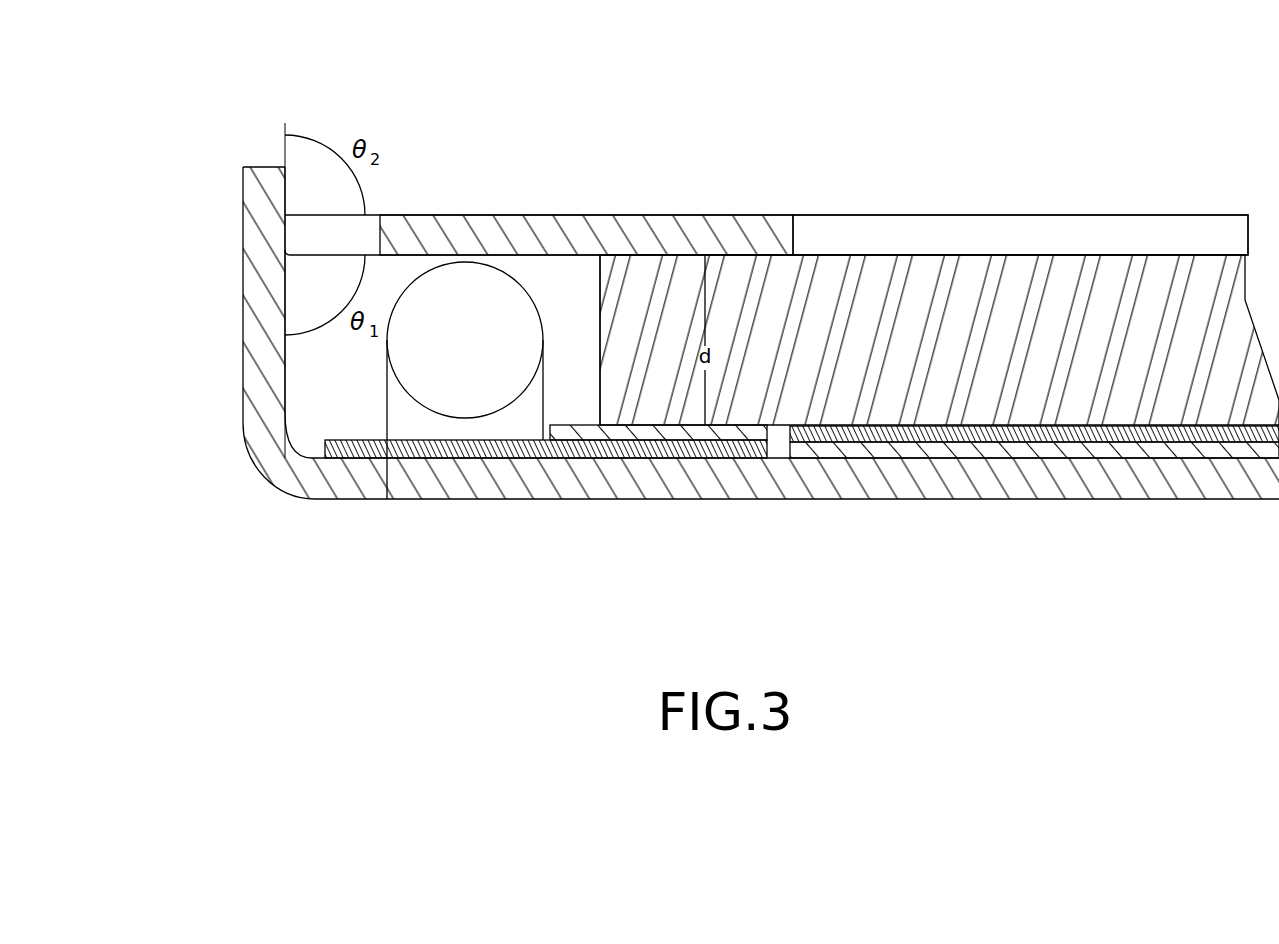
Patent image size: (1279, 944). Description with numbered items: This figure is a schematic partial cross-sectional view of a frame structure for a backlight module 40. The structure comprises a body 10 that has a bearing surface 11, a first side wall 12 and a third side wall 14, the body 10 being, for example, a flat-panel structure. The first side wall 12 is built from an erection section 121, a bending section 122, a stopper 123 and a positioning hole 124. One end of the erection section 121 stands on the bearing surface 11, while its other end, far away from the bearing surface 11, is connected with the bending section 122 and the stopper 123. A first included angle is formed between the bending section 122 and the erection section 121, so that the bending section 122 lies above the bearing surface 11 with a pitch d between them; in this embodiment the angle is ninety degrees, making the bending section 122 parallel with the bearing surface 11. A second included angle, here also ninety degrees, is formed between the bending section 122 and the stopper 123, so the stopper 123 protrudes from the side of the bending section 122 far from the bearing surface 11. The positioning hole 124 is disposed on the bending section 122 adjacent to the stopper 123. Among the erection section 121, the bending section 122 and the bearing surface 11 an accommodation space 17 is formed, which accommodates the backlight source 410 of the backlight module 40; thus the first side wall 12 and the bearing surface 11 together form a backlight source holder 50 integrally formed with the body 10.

The body 10 is at (1105, 517).
The bearing surface 11 is at (385, 499).
The first side wall 12 is at (150, 74).
The third side wall 14 is at (1160, 243).
The accommodation space 17 is at (563, 312).
The backlight module 40 is at (962, 300).
The backlight source holder 50 is at (97, 223).
The erection section 121 is at (243, 389).
The bending section 122 is at (481, 215).
The stopper 123 is at (243, 188).
The positioning hole 124 is at (284, 283).
The backlight source 410 is at (467, 383).